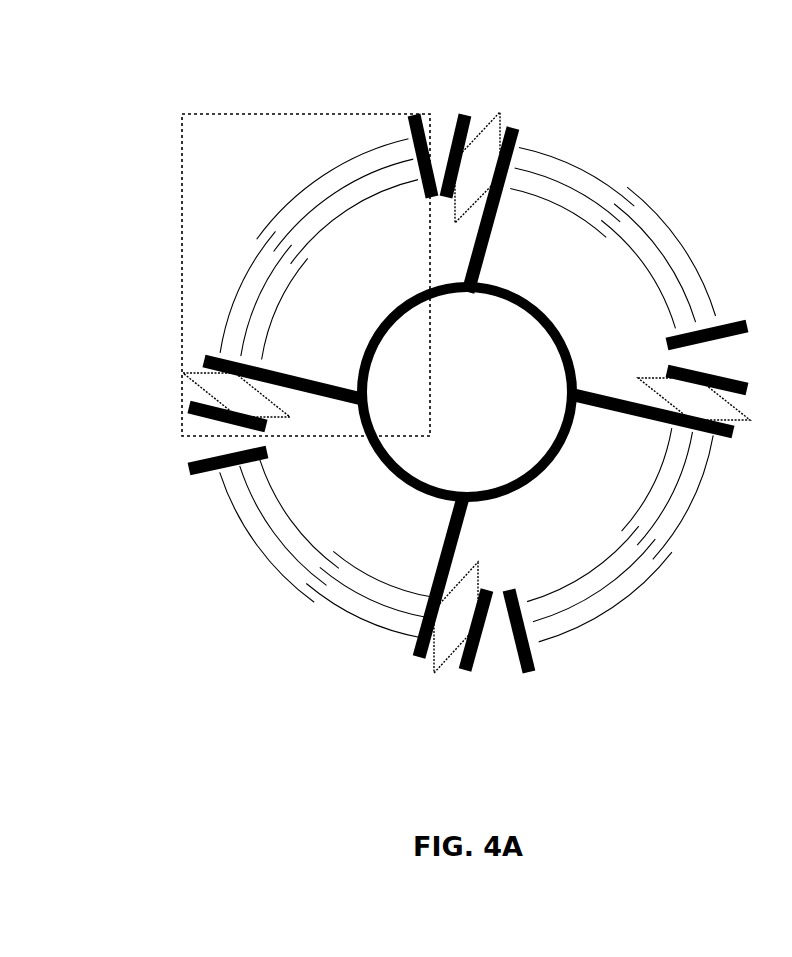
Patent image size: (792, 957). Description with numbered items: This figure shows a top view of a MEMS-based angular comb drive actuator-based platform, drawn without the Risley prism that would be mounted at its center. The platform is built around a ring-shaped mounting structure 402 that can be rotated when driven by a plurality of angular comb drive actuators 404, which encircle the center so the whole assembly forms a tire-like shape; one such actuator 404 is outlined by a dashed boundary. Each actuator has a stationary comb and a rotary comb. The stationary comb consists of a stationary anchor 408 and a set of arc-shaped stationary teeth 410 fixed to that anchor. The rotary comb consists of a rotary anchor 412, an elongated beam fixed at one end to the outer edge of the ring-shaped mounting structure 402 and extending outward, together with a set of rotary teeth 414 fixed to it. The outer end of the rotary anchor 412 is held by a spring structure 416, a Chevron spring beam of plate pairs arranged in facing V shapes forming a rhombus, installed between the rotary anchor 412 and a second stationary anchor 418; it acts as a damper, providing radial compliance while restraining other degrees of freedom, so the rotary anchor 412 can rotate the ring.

The ring-shaped mounting structure 402 is at (395, 317).
The angular comb drive actuator 404 is at (243, 113).
The stationary anchor 408 is at (404, 126).
The stationary teeth 410 is at (310, 183).
The rotary anchor 412 is at (320, 387).
The rotary teeth 414 is at (237, 304).
The spring structure 416 is at (293, 414).
The second stationary anchor 418 is at (188, 411).